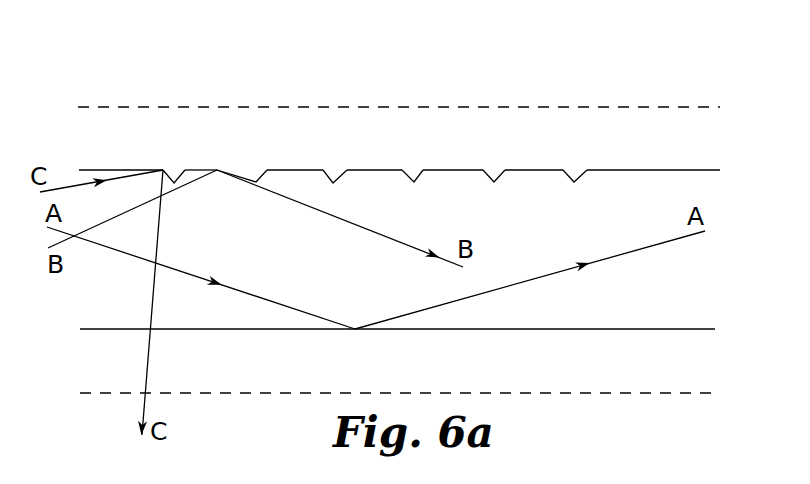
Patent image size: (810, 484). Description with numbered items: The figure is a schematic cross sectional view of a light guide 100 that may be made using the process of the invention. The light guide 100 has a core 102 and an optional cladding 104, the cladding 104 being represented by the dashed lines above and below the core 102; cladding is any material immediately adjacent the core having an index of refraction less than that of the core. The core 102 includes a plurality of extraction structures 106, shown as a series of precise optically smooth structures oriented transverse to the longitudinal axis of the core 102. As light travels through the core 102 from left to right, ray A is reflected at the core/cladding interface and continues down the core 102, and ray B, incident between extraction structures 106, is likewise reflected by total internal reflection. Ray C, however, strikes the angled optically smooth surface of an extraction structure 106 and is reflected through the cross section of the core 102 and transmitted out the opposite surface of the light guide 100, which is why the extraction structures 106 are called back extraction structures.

The light guide 100 is at (570, 84).
The core 102 is at (603, 193).
The cladding 104 is at (685, 138).
The extraction structures 106 is at (420, 172).